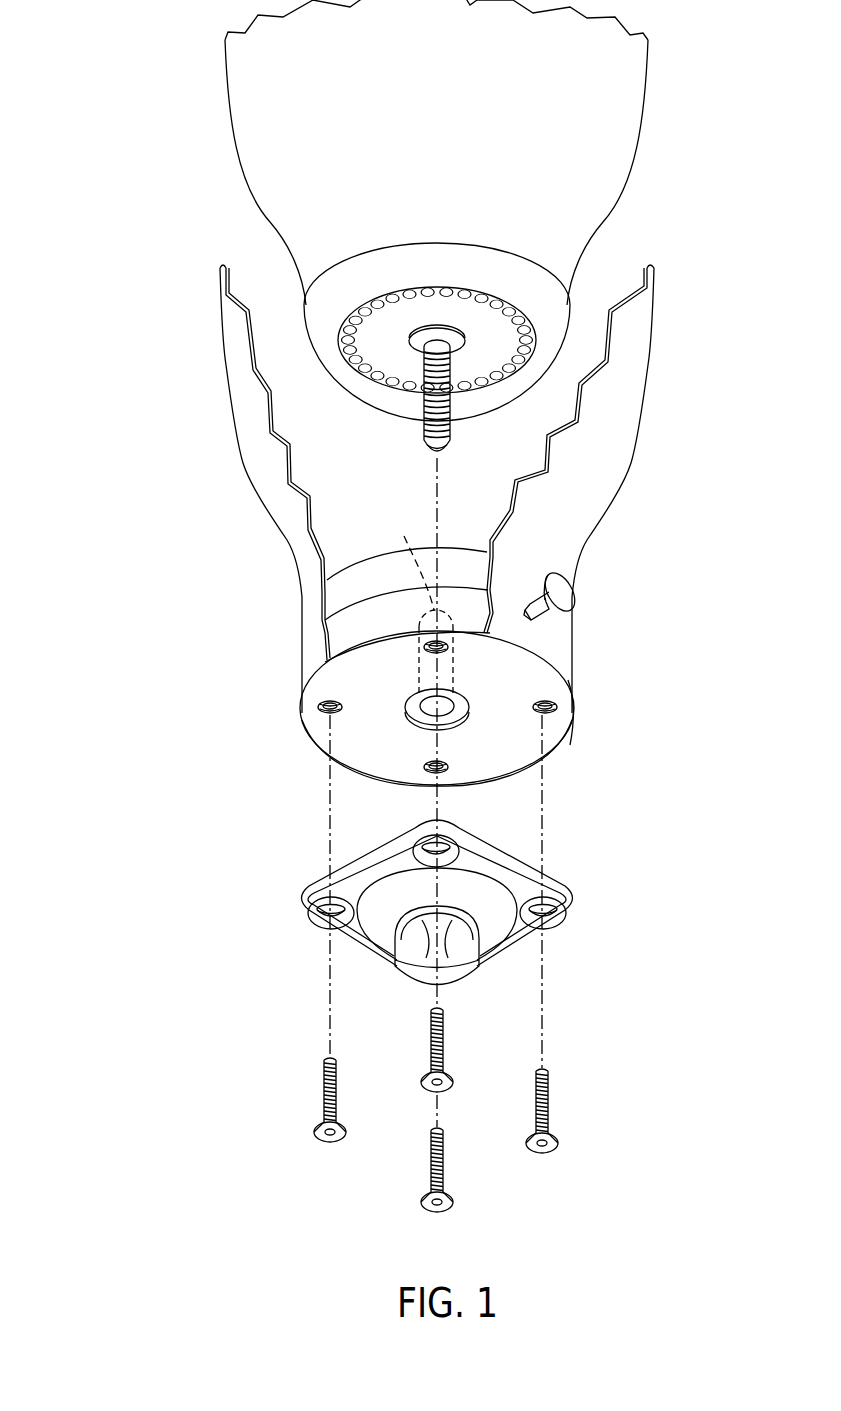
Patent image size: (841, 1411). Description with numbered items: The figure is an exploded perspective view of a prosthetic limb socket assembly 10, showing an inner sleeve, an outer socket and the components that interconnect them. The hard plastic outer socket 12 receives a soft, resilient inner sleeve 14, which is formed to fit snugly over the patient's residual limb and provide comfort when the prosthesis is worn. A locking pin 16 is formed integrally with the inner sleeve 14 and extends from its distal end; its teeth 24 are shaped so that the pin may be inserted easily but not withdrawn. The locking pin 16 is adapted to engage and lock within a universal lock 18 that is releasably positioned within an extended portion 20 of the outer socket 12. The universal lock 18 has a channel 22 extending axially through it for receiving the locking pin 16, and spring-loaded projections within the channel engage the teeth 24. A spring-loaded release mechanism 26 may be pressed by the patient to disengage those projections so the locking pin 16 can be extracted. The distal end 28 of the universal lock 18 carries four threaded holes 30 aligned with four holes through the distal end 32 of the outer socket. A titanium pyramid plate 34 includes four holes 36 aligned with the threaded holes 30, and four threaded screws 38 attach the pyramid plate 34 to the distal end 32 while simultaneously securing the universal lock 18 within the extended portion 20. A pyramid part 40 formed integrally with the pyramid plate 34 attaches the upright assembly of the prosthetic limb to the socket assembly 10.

The prosthetic limb socket assembly 10 is at (185, 563).
The outer socket 12 is at (238, 408).
The inner sleeve 14 is at (243, 130).
The locking pin 16 is at (428, 345).
The universal lock 18 is at (330, 594).
The extended portion 20 is at (634, 642).
The channel 22 is at (419, 598).
The teeth 24 is at (450, 432).
The spring-loaded release mechanism 26 is at (575, 595).
The distal end of the universal lock 28 is at (324, 738).
The threaded holes 30 is at (318, 707).
The distal end of the outer socket 32 is at (560, 742).
The pyramid plate 34 is at (445, 918).
The holes 36 is at (463, 858).
The threaded screws 38 is at (430, 1032).
The pyramid part 40 is at (462, 980).